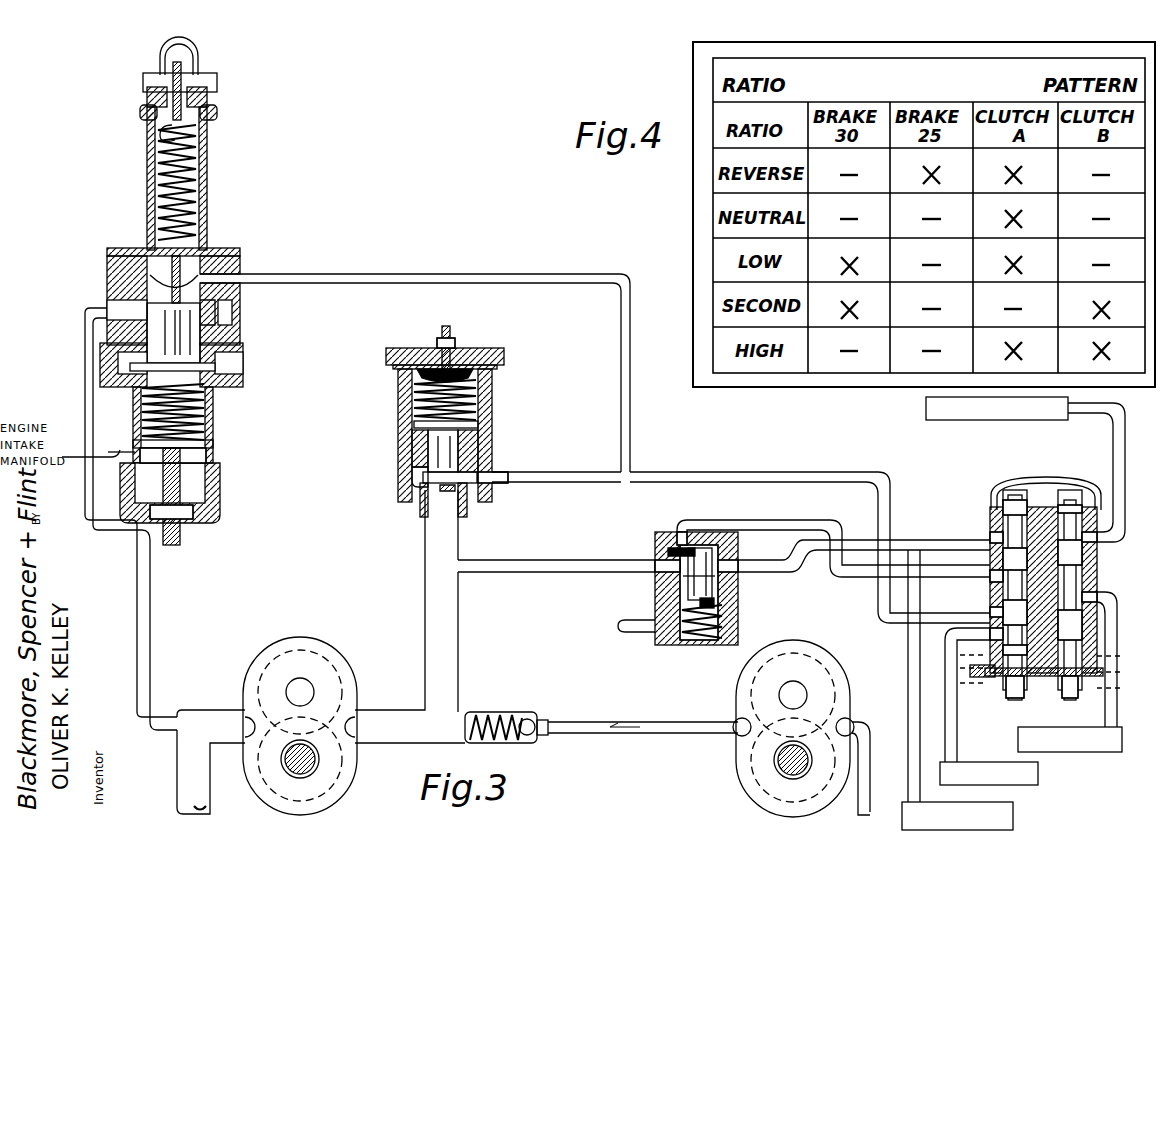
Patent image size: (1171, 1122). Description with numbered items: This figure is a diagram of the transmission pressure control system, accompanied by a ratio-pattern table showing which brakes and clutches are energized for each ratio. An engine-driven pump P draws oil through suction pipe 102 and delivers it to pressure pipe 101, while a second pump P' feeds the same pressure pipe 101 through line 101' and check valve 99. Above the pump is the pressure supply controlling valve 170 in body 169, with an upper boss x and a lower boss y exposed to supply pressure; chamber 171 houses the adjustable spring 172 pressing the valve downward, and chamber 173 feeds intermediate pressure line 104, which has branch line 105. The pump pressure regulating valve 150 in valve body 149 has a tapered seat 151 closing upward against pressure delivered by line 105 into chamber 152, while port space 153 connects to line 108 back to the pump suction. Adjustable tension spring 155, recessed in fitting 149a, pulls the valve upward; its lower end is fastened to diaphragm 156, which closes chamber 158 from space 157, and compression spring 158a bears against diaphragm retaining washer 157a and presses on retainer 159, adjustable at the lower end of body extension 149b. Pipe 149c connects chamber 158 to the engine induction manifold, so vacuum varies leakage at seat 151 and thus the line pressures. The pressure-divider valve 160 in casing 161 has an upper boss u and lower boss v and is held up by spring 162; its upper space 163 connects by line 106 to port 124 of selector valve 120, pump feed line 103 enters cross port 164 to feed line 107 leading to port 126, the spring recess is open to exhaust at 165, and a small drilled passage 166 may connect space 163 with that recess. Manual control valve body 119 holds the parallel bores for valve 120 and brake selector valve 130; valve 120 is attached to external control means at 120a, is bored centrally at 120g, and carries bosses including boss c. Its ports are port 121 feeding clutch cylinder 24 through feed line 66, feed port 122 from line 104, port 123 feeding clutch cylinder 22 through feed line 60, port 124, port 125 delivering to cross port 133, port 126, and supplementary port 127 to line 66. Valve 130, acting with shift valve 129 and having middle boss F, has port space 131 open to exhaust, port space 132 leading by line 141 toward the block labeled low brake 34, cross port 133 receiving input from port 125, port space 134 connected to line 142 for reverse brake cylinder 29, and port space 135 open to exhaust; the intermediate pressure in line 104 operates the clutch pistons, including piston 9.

The adjustable tension spring 155 is at (198, 170).
The fitting 149a is at (207, 222).
The chamber 152 is at (232, 270).
The valve body 149 is at (240, 325).
The pump pressure regulating valve 150 is at (160, 318).
The tapered seat 151 is at (232, 310).
The port space 153 is at (228, 315).
The space 157 is at (125, 360).
The diaphragm 156 is at (240, 366).
The diaphragm retaining washer 157a is at (125, 386).
The chamber 158 is at (213, 385).
The compression spring 158a is at (213, 425).
The extension of the valve body 149b is at (213, 452).
The pipe 149c is at (113, 460).
The retainer 159 is at (190, 470).
The line 108 is at (85, 392).
The pump suction pipe 102 is at (177, 783).
The pump P is at (281, 726).
The pressure pipe 101 is at (410, 616).
The pump feed line 103 is at (528, 575).
The check valve 99 is at (532, 738).
The line 101' is at (643, 750).
The pump P' is at (805, 728).
The chamber 171 is at (488, 372).
The upper boss x is at (435, 372).
The valve body 169 is at (492, 415).
The adjustable spring 172 is at (412, 396).
The pressure supply controlling valve 170 is at (428, 440).
The lower boss y is at (410, 475).
The chamber 173 is at (482, 478).
The intermediate pressure line 104 is at (552, 484).
The branch line 105 is at (392, 272).
The casing 161 is at (738, 634).
The drilled passage 166 is at (678, 548).
The upper space 163 is at (680, 548).
The upper boss u is at (700, 552).
The cross port 164 is at (668, 572).
The pressure-divider valve 160 is at (688, 602).
The lower boss v is at (714, 602).
The spring 162 is at (716, 645).
The exhaust 165 is at (636, 632).
The line 106 is at (782, 518).
The line 107 is at (768, 558).
The feed line 66 is at (908, 735).
The manual control valve body 119 is at (1100, 495).
The clutch piston 9 is at (1092, 490).
The selector valve 120 is at (1024, 682).
The selector valve 130 is at (1070, 500).
The central bore 120g is at (1015, 500).
The port 126 is at (1008, 548).
The supplementary delivery port 127 is at (1030, 548).
The port 125 is at (990, 537).
The port 124 is at (990, 576).
The port 123 is at (990, 612).
The port 121 is at (962, 640).
The line 142 is at (1126, 436).
The port space 135 is at (1097, 512).
The shift valve 129 is at (1085, 525).
The port space 134 is at (1097, 540).
The boss F is at (1097, 565).
The cross port 133 is at (1082, 572).
The port space 132 is at (1117, 605).
The boss c is at (1097, 618).
The port space 131 is at (1082, 626).
The attachment end 120a is at (1008, 680).
The feed port 122 is at (1070, 695).
The line 141 is at (1115, 720).
The feed line 60 is at (952, 748).
The reverse brake cylinder 29 is at (1000, 422).
The low brake 34 is at (1110, 752).
The clutch cylinder 22 is at (1028, 785).
The clutch cylinder 24 is at (1013, 820).